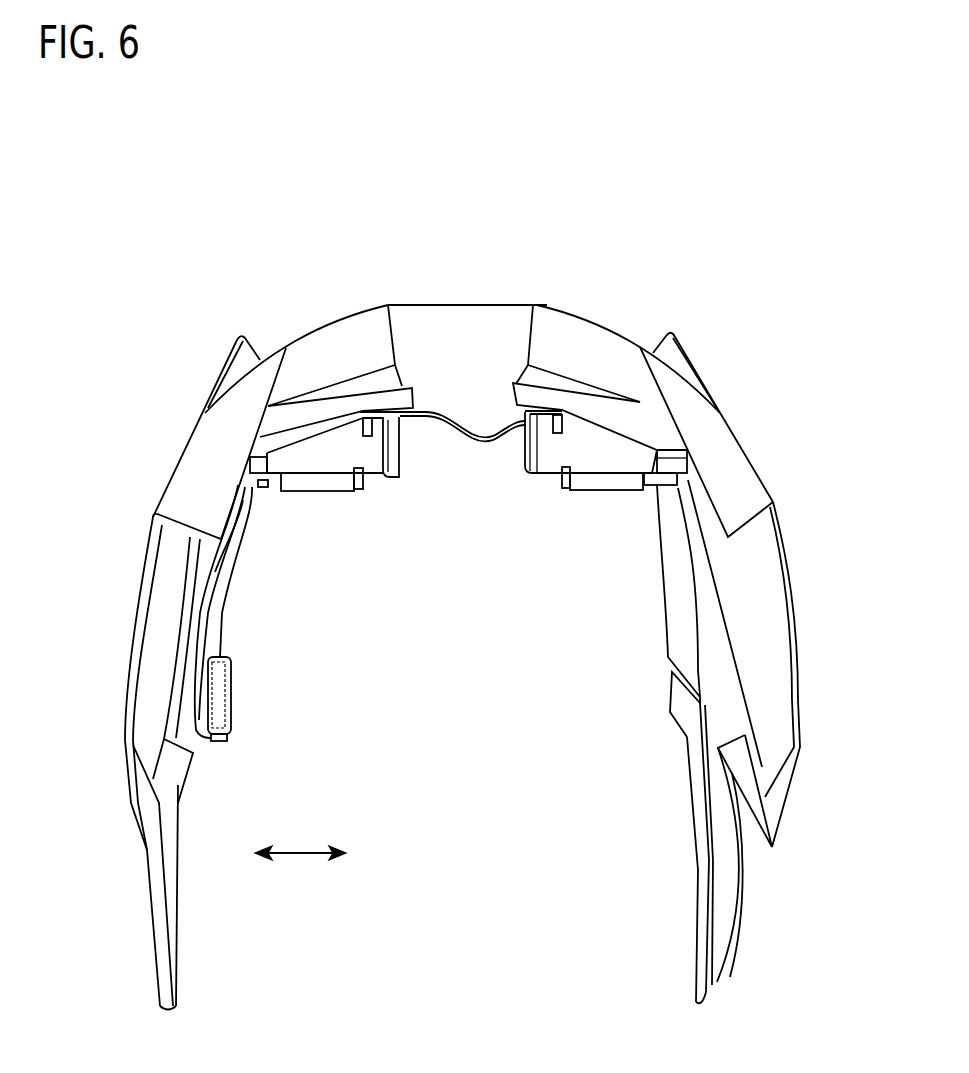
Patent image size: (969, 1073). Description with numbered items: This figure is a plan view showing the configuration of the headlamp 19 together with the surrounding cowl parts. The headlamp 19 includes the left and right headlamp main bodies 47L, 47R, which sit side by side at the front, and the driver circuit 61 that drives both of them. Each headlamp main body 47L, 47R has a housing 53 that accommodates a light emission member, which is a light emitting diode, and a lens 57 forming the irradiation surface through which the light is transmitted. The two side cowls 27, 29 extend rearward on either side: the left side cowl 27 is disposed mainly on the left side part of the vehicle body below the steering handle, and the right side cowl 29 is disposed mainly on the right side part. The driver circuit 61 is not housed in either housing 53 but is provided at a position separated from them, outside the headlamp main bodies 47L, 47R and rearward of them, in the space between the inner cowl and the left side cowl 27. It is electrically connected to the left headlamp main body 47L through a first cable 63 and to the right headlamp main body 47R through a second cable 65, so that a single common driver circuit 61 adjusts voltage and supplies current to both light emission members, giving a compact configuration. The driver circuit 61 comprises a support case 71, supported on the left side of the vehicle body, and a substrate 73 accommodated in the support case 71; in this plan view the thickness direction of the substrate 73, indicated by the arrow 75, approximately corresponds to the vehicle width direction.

The headlamp 19 is at (336, 252).
The left headlamp main body 47L is at (312, 320).
The right headlamp main body 47R is at (607, 319).
The lens 57 is at (359, 313).
The left side cowl 27 is at (177, 469).
The right side cowl 29 is at (742, 455).
The housing 53 is at (383, 476).
The first cable 63 is at (250, 516).
The second cable 65 is at (234, 554).
The driver circuit 61 is at (238, 676).
The substrate 73 is at (238, 704).
The support case 71 is at (231, 732).
The arrow 75 is at (296, 862).